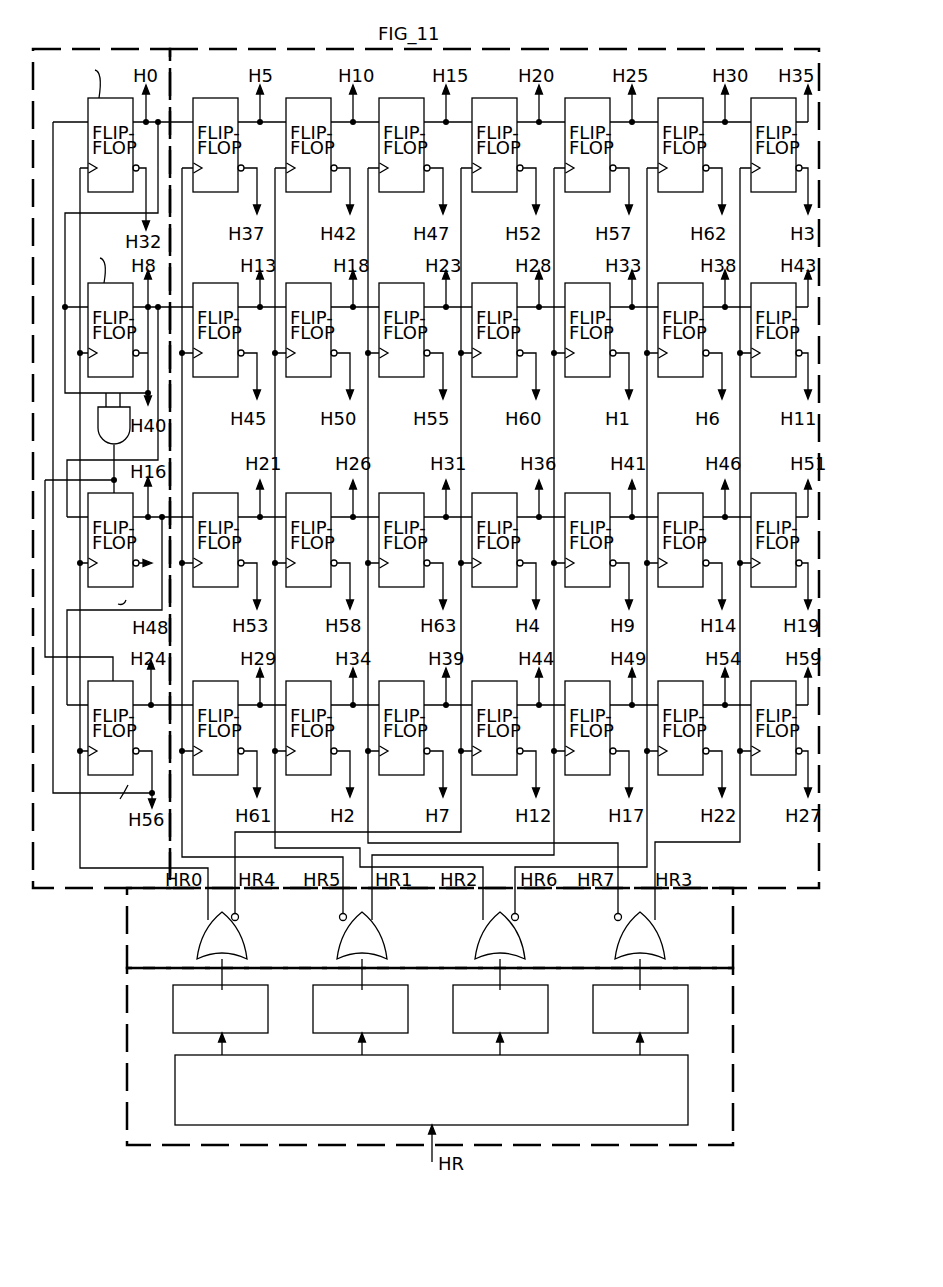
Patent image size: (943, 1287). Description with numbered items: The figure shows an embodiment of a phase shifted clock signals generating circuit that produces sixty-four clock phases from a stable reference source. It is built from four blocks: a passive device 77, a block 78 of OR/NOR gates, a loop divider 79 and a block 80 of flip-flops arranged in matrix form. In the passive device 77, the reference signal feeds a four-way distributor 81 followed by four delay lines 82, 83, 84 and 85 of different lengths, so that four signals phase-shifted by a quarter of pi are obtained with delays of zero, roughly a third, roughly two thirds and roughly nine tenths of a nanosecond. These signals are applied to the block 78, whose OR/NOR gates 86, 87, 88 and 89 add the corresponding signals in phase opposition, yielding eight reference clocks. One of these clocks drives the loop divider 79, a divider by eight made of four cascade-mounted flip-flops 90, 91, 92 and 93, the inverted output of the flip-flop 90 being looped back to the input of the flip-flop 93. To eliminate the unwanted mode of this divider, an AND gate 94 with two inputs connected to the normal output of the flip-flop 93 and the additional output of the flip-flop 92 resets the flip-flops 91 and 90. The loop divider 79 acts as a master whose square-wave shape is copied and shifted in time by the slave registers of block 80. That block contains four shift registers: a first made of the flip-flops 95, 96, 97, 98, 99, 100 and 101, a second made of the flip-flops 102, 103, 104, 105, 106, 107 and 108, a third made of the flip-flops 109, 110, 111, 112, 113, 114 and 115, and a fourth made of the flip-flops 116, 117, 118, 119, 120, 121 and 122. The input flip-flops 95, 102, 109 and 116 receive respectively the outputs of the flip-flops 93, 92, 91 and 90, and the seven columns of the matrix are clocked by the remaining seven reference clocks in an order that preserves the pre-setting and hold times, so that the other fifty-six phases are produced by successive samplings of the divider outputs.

The passive device 77 is at (127, 1073).
The block of OR/NOR gates 78 is at (127, 920).
The loop divider 79 is at (100, 48).
The block of flip-flops in matrix form 80 is at (575, 48).
The four-way distributor 81 is at (688, 1082).
The delay line 82 is at (282, 991).
The delay line 83 is at (422, 991).
The delay line 84 is at (562, 991).
The delay line 85 is at (702, 991).
The OR/NOR gate 86 is at (245, 940).
The OR/NOR gate 87 is at (385, 940).
The OR/NOR gate 88 is at (523, 940).
The OR/NOR gate 89 is at (663, 940).
The flip-flop 90 is at (134, 718).
The flip-flop 91 is at (134, 528).
The flip-flop 92 is at (134, 320).
The flip-flop 93 is at (104, 192).
The AND gate 94 is at (98, 426).
The flip-flop 95 is at (214, 98).
The flip-flop 96 is at (314, 98).
The flip-flop 97 is at (406, 98).
The flip-flop 98 is at (499, 98).
The flip-flop 99 is at (591, 98).
The flip-flop 100 is at (686, 98).
The flip-flop 101 is at (770, 192).
The flip-flop 102 is at (213, 283).
The flip-flop 103 is at (310, 283).
The flip-flop 104 is at (400, 283).
The flip-flop 105 is at (493, 283).
The flip-flop 106 is at (585, 283).
The flip-flop 107 is at (678, 283).
The flip-flop 108 is at (767, 283).
The flip-flop 109 is at (223, 493).
The flip-flop 110 is at (318, 493).
The flip-flop 111 is at (408, 493).
The flip-flop 112 is at (498, 493).
The flip-flop 113 is at (593, 493).
The flip-flop 114 is at (683, 493).
The flip-flop 115 is at (773, 493).
The flip-flop 116 is at (216, 681).
The flip-flop 117 is at (310, 681).
The flip-flop 118 is at (403, 681).
The flip-flop 119 is at (498, 681).
The flip-flop 120 is at (590, 681).
The flip-flop 121 is at (683, 681).
The flip-flop 122 is at (773, 681).